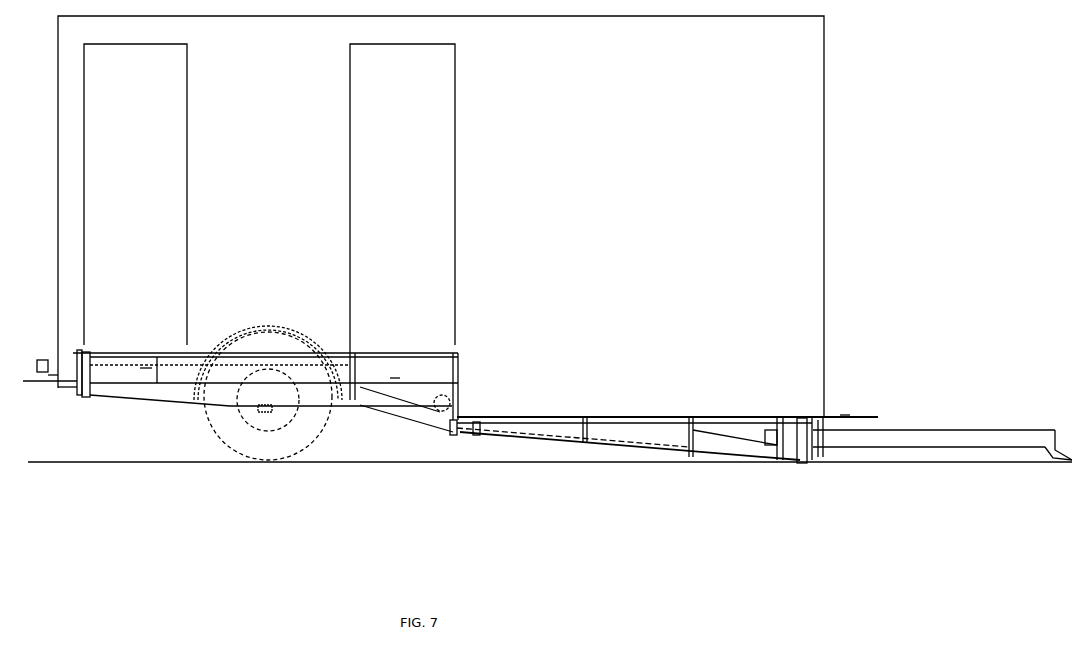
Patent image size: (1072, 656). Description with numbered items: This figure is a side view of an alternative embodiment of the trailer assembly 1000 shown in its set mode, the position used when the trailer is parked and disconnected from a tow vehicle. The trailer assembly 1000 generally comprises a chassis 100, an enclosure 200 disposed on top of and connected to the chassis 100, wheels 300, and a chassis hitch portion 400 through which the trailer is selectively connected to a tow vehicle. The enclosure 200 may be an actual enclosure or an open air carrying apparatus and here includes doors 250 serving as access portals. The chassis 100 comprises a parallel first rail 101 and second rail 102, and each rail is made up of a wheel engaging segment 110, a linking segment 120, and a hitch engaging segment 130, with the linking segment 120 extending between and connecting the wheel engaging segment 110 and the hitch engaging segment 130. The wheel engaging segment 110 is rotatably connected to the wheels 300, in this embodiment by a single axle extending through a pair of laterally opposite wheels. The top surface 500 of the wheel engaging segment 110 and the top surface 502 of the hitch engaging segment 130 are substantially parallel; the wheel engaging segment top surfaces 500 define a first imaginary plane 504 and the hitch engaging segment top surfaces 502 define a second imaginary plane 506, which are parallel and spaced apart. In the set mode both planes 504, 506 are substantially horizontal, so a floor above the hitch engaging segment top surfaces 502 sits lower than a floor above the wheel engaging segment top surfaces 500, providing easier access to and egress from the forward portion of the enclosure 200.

The trailer assembly 1000 is at (550, 276).
The enclosure 200 is at (808, 210).
The doors 250 is at (170, 202).
The wheel engaging segment 110 is at (160, 390).
The wheels 300 is at (242, 442).
The linking segment 120 is at (463, 395).
The chassis 100 is at (481, 458).
The first rail 101 is at (602, 432).
The hitch engaging segment 130 is at (652, 432).
The second rail 102 is at (705, 432).
The chassis hitch portion 400 is at (963, 442).
The top surface of the wheel engaging segment 500 is at (146, 380).
The top surface of the hitch engaging segment 502 is at (565, 417).
The first imaginary plane 504 is at (395, 378).
The second imaginary plane 506 is at (845, 415).